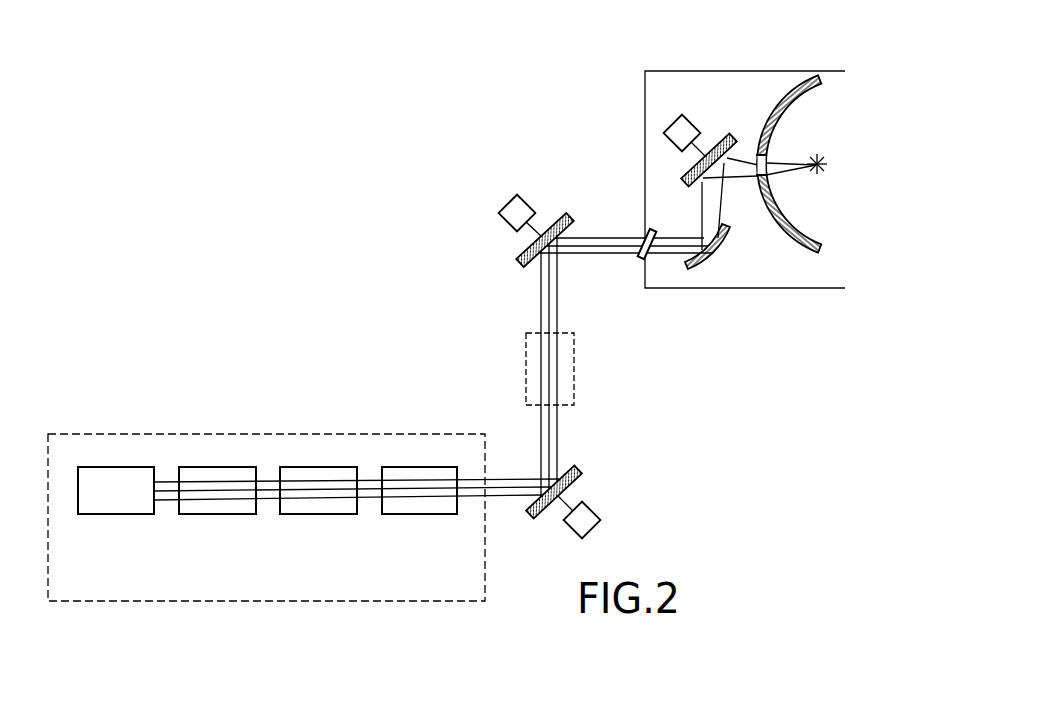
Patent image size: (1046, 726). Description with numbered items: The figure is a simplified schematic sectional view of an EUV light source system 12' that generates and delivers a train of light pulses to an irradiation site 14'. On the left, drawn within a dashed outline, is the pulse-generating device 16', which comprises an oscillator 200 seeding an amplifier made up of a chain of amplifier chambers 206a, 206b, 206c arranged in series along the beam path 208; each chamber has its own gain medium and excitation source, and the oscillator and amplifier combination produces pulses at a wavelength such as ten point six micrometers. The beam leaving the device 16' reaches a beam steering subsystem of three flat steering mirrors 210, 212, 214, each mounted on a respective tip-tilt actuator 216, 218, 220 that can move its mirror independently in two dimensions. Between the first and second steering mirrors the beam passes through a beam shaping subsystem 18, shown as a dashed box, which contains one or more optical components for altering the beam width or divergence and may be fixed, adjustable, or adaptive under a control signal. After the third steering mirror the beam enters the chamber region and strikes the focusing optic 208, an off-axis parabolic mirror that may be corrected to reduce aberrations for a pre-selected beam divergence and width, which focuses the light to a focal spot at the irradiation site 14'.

The system 12' is at (295, 243).
The irradiation site 14' is at (814, 163).
The device 16' is at (266, 470).
The beam shaping subsystem 18 is at (526, 360).
The oscillator 200 is at (97, 502).
The amplifier chamber 206a is at (217, 516).
The amplifier chamber 206b is at (318, 516).
The amplifier chamber 206c is at (419, 516).
The focusing optic 208 is at (370, 482).
The steering mirror 210 is at (578, 466).
The steering mirror 212 is at (570, 222).
The steering mirror 214 is at (731, 138).
The tip-tilt actuator 216 is at (597, 507).
The tip-tilt actuator 218 is at (500, 203).
The tip-tilt actuator 220 is at (669, 120).